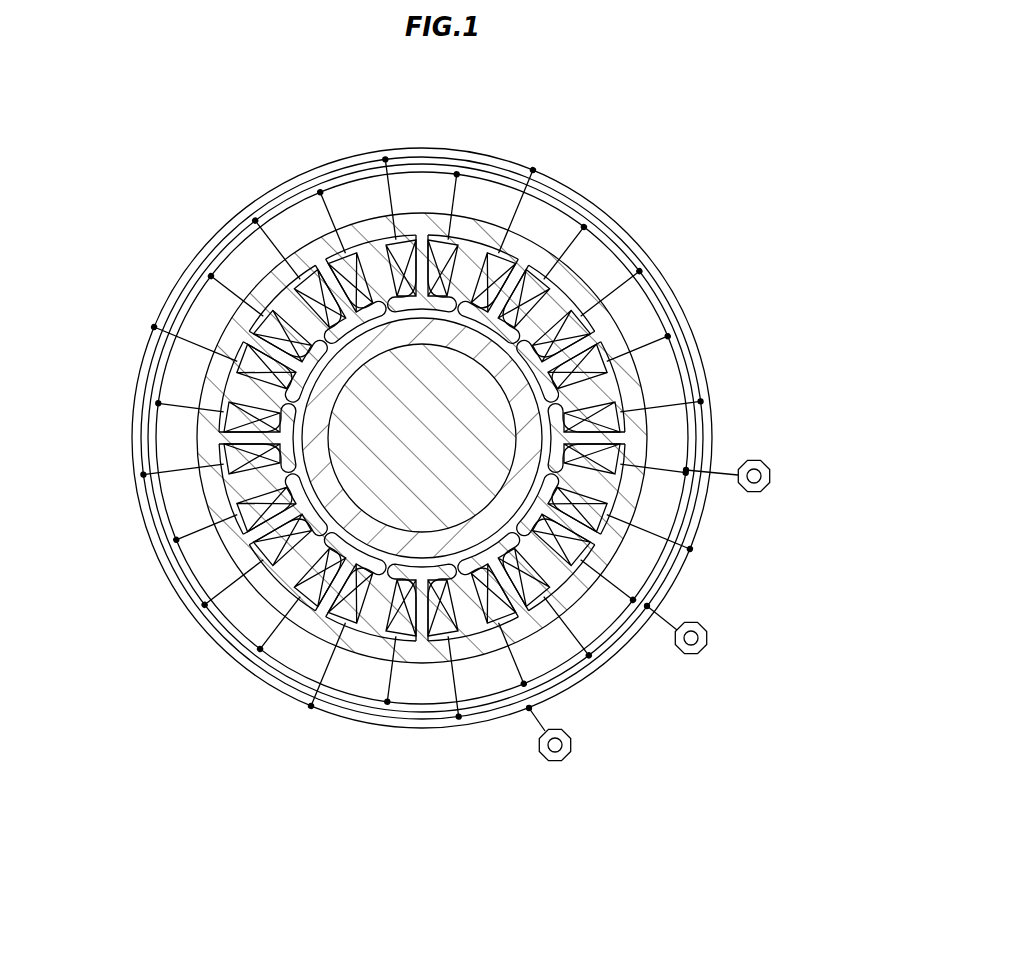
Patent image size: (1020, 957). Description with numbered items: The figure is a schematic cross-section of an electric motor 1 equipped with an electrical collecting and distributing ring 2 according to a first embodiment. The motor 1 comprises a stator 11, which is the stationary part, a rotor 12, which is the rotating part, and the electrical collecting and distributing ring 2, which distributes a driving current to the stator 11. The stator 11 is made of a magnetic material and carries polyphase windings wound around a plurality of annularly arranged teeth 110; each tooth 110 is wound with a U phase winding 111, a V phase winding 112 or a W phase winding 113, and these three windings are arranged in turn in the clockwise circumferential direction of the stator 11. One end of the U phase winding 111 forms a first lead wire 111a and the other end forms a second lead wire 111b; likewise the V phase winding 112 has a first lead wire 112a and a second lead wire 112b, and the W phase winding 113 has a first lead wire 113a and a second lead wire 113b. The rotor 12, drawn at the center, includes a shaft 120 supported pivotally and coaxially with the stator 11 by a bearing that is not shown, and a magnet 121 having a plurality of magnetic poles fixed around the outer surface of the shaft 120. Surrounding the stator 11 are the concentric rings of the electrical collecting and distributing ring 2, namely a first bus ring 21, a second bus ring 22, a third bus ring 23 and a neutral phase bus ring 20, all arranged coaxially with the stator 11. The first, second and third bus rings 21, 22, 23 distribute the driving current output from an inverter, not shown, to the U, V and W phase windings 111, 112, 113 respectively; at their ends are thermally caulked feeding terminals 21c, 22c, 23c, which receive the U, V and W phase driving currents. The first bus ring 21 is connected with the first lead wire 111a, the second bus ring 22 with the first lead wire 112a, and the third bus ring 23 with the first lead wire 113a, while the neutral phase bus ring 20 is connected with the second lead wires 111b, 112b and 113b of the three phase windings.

The motor 1 is at (763, 62).
The electrical collecting and distributing ring 2 is at (622, 128).
The stator 11 is at (646, 232).
The rotor 12 is at (598, 268).
The neutral phase bus ring 20 is at (285, 208).
The first bus ring 21 is at (311, 186).
The second bus ring 22 is at (333, 172).
The third bus ring 23 is at (353, 152).
The feeding terminal 21c is at (752, 494).
The feeding terminal 22c is at (704, 652).
The feeding terminal 23c is at (568, 758).
The tooth 110 is at (470, 558).
The U phase winding 111 is at (540, 352).
The first lead wire 111a is at (515, 342).
The second lead wire 111b is at (604, 232).
The V phase winding 112 is at (618, 412).
The first lead wire 112a is at (600, 418).
The second lead wire 112b is at (630, 355).
The W phase winding 113 is at (538, 198).
The first lead wire 113a is at (493, 190).
The second lead wire 113b is at (458, 192).
The shaft 120 is at (398, 444).
The magnet 121 is at (340, 520).